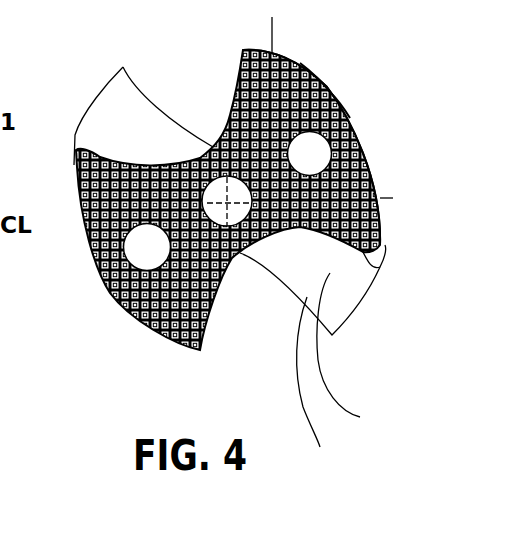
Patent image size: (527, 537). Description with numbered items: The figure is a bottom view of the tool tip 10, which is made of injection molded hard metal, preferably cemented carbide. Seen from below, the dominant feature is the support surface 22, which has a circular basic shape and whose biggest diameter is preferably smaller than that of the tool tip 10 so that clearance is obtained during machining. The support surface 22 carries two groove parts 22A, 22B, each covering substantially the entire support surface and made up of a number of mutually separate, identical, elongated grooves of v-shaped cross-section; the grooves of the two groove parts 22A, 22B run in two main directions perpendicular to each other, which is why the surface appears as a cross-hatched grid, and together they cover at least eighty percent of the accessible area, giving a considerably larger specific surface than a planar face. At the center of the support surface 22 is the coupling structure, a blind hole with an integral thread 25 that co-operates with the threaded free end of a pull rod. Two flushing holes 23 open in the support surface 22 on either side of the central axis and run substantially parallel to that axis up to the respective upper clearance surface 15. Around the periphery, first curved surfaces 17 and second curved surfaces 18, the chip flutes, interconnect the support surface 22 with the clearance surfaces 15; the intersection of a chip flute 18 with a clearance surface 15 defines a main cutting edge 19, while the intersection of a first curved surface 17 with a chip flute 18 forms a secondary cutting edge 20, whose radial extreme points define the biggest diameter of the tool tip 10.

The tool tip 10 is at (102, 380).
The upper clearance surface 15 is at (13, 309).
The first curved surface 17 is at (385, 247).
The second curved surface 18 is at (352, 352).
The main cutting edge 19 is at (320, 387).
The secondary cutting edge 20 is at (97, 95).
The support surface 22 is at (367, 167).
The groove part 22A is at (327, 83).
The groove part 22B is at (340, 103).
The flushing hole 23 is at (312, 153).
The integral thread 25 is at (201, 150).